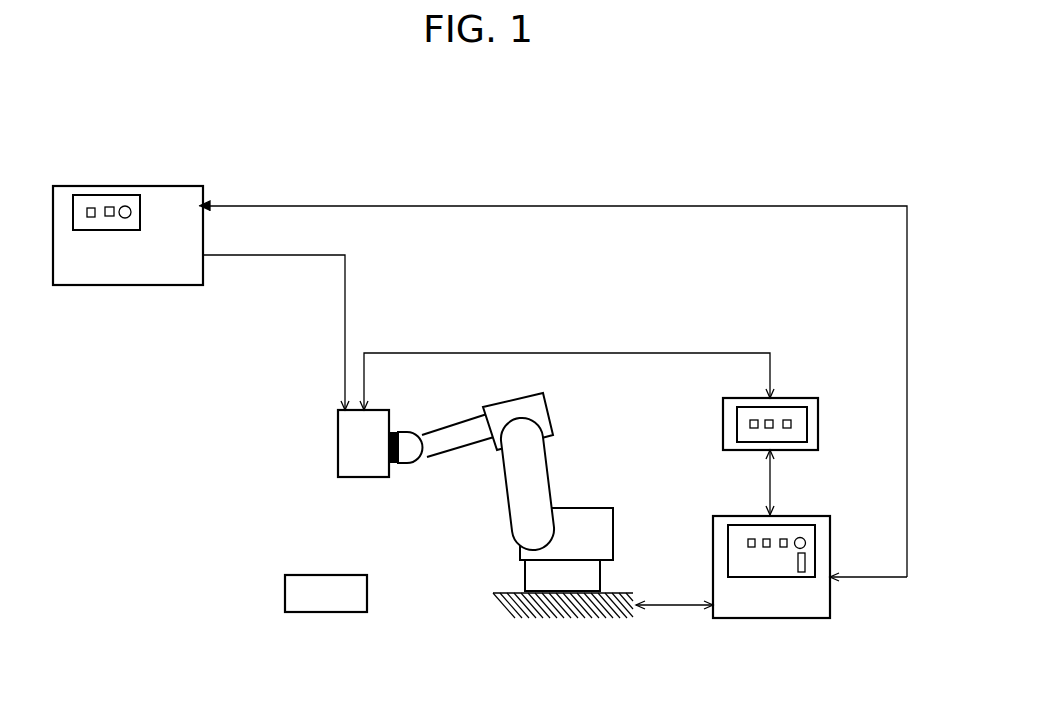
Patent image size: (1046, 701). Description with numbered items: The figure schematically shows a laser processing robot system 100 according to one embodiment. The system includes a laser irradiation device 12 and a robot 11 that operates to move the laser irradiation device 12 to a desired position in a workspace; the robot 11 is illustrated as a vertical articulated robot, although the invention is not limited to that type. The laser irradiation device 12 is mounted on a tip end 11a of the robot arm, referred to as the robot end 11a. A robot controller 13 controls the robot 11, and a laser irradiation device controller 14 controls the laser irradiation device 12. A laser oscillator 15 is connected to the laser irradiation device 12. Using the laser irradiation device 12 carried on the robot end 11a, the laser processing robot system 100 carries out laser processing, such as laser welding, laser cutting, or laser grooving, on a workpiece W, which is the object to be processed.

The laser processing robot system 100 is at (529, 171).
The laser oscillator 15 is at (152, 186).
The laser irradiation device 12 is at (338, 438).
The robot 11 is at (548, 466).
The tip end of robot arm 11a is at (396, 449).
The laser irradiation device controller 14 is at (723, 422).
The robot controller 13 is at (713, 537).
The workpiece W is at (285, 596).